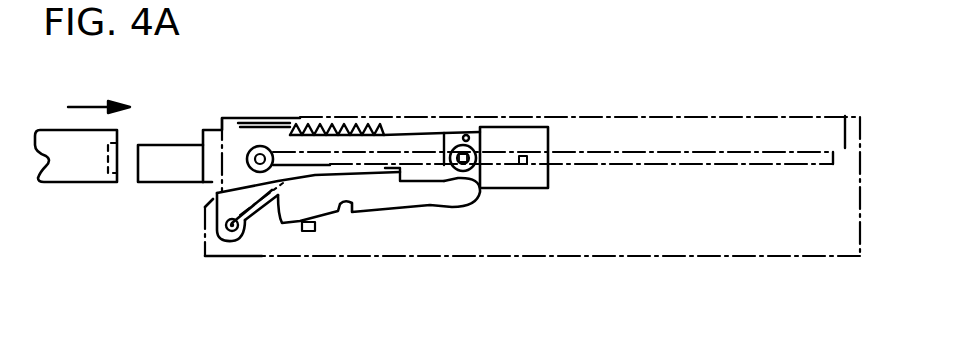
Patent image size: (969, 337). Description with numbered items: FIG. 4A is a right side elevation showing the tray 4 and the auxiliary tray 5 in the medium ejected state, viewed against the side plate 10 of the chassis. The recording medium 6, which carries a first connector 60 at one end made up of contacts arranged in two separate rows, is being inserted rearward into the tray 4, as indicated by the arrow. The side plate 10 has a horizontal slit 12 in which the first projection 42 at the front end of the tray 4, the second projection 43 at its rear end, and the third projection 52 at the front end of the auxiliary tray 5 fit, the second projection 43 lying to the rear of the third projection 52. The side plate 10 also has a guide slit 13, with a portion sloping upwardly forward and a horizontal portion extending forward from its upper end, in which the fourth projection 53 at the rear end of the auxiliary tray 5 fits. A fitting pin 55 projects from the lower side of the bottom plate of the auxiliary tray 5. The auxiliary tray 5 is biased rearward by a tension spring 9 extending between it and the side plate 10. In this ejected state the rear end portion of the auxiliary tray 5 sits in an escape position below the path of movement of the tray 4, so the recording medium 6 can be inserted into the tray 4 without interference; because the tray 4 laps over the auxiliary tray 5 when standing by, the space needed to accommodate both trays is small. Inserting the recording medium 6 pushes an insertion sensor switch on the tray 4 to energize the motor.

The tray 4 is at (520, 135).
The auxiliary tray 5 is at (428, 197).
The recording medium 6 is at (70, 173).
The tension spring 9 is at (400, 132).
The side plate 10 is at (846, 112).
The horizontal slit 12 is at (647, 150).
The guide slit 13 is at (282, 225).
The first projection 42 is at (523, 165).
The second projection 43 is at (264, 152).
The third projection 52 is at (463, 171).
The fourth projection 53 is at (232, 241).
The fitting pin 55 is at (312, 231).
The first connector 60 is at (108, 178).